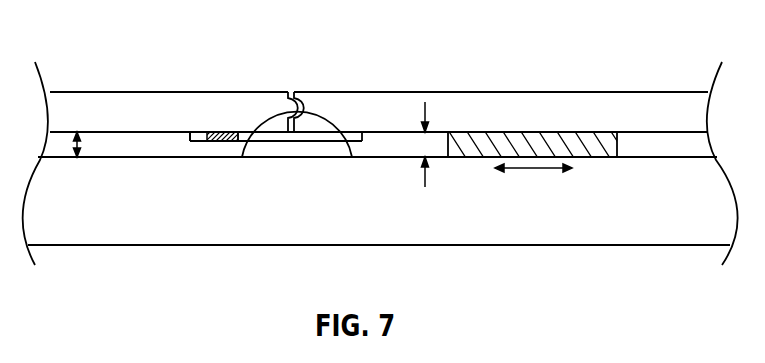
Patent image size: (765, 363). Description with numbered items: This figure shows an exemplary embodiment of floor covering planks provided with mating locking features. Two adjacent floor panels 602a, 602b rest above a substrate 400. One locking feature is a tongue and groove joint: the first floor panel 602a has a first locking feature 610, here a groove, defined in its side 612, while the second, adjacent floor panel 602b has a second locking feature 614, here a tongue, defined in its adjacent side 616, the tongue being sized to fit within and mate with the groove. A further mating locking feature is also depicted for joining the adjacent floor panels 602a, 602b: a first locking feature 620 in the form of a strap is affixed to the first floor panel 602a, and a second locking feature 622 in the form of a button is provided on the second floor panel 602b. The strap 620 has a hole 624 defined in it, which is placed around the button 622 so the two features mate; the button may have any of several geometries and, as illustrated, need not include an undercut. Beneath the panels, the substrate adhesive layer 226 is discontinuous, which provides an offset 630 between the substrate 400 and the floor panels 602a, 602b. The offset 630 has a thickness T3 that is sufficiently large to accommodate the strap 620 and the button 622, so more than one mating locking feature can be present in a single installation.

The substrate 400 is at (598, 220).
The first floor panel 602a is at (492, 102).
The second adjacent floor panel 602b is at (163, 102).
The first locking feature 610 is at (352, 157).
The side of the floor panel 612 is at (301, 93).
The second locking feature 614 is at (246, 138).
The adjacent side of the adjacent floor panel 616 is at (290, 95).
The first locking feature 620 is at (360, 138).
The second locking feature 622 is at (215, 141).
The hole 624 is at (190, 134).
The substrate adhesive layer 226 is at (617, 143).
The offset 630 is at (79, 146).
The thickness T3 is at (424, 161).